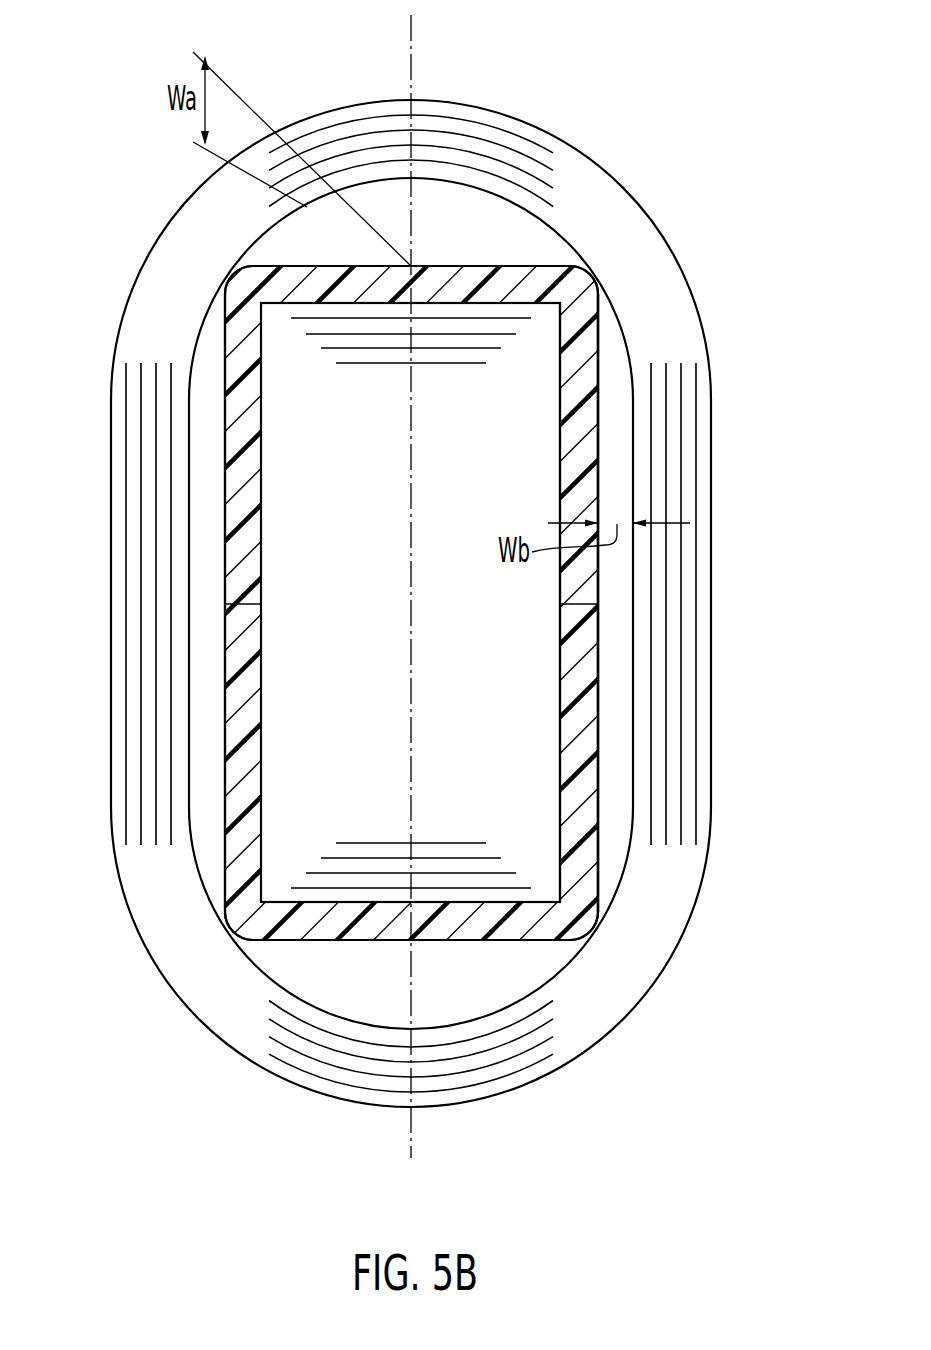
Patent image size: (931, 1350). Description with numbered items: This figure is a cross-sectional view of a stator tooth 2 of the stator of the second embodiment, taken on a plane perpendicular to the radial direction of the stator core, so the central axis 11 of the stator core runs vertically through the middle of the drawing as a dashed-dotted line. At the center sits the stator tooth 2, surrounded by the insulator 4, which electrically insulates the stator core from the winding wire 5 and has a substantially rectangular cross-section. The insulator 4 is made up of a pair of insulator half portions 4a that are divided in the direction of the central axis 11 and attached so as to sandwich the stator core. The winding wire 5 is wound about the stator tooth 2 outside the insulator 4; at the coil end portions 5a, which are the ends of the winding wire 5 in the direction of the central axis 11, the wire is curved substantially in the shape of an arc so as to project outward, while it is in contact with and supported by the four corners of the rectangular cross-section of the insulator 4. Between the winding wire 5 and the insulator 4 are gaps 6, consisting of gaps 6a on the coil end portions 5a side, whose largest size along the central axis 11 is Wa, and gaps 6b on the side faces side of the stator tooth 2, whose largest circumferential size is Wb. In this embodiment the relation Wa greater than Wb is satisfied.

The stator tooth 2 is at (348, 523).
The insulator 4 is at (465, 600).
The insulator half portion 4a is at (580, 570).
The winding wire 5 is at (443, 580).
The coil end portion 5a is at (412, 97).
The gap 6 is at (514, 576).
The gap on coil end portion side 6a is at (470, 237).
The gap on side face side 6b is at (612, 455).
The central axis 11 is at (412, 31).